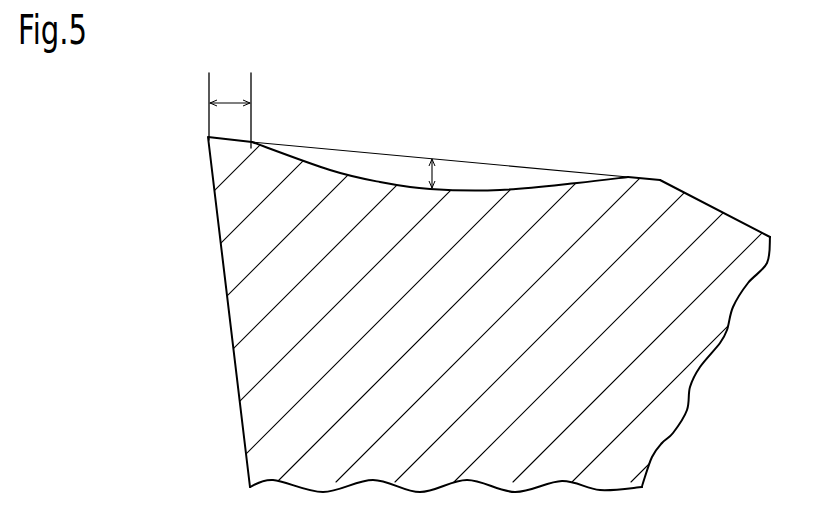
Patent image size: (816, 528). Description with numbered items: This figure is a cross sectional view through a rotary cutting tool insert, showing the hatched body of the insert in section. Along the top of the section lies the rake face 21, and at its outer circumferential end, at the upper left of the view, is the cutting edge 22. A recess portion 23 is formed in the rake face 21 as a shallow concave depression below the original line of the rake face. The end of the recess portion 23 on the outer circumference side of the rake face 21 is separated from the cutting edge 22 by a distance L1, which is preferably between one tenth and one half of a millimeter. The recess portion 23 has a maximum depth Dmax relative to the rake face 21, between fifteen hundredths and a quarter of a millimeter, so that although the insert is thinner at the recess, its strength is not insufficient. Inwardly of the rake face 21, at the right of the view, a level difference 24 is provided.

The rake face 21 is at (633, 177).
The cutting edge 22 is at (209, 137).
The recess portion 23 is at (532, 182).
The level difference 24 is at (713, 207).
The distance L1 is at (230, 104).
The maximum depth Dmax is at (436, 171).